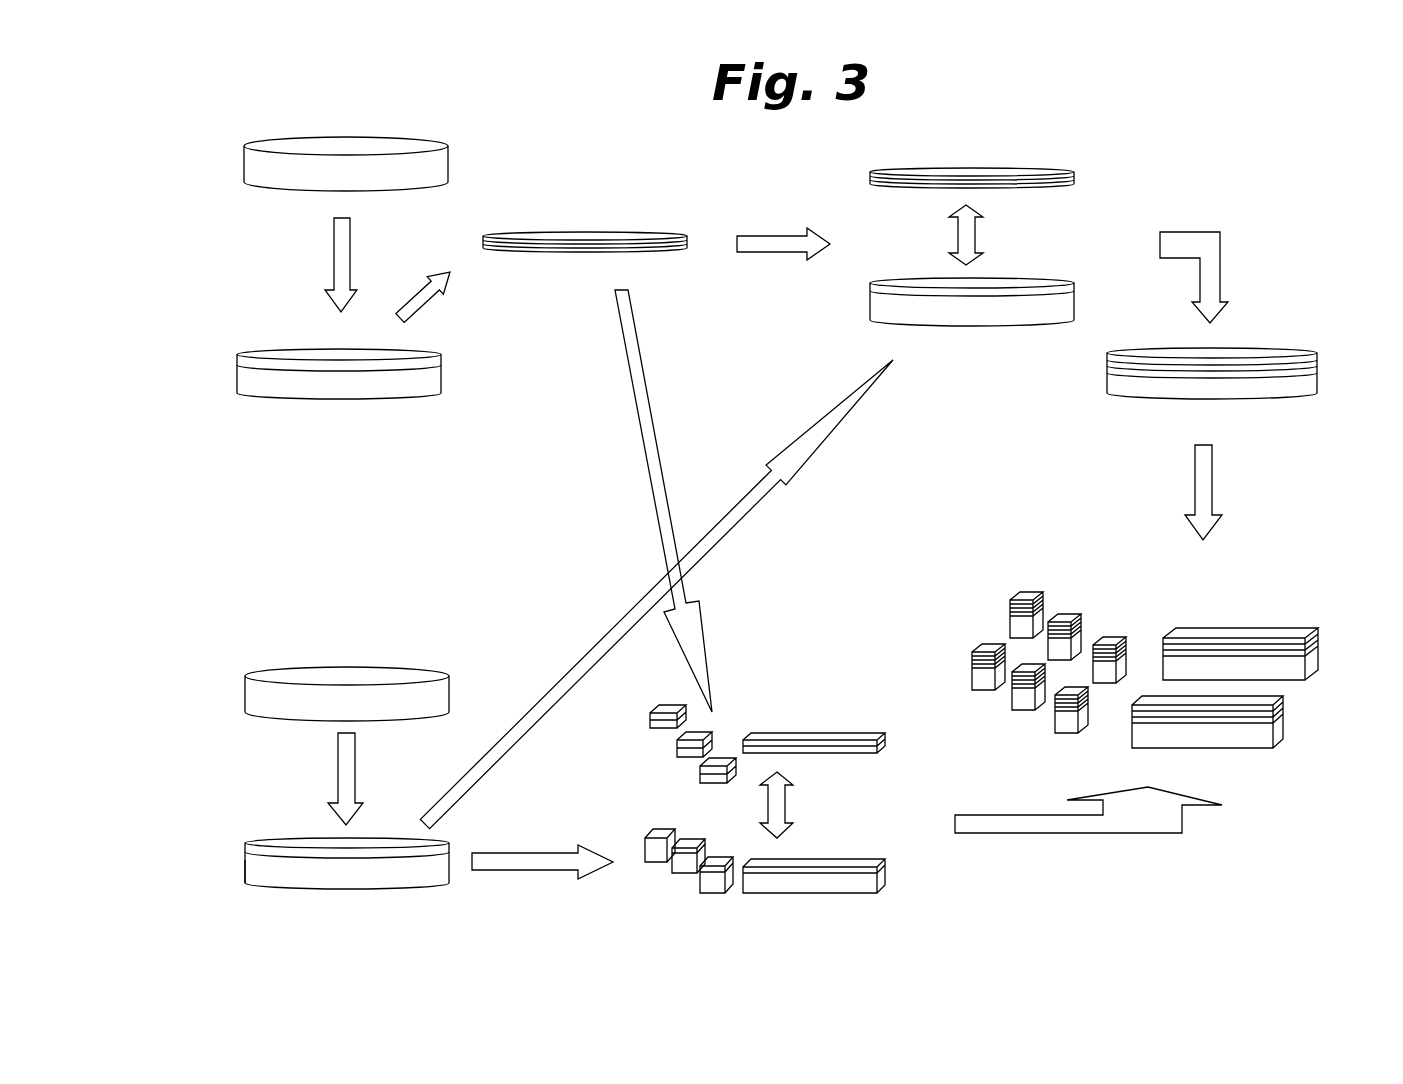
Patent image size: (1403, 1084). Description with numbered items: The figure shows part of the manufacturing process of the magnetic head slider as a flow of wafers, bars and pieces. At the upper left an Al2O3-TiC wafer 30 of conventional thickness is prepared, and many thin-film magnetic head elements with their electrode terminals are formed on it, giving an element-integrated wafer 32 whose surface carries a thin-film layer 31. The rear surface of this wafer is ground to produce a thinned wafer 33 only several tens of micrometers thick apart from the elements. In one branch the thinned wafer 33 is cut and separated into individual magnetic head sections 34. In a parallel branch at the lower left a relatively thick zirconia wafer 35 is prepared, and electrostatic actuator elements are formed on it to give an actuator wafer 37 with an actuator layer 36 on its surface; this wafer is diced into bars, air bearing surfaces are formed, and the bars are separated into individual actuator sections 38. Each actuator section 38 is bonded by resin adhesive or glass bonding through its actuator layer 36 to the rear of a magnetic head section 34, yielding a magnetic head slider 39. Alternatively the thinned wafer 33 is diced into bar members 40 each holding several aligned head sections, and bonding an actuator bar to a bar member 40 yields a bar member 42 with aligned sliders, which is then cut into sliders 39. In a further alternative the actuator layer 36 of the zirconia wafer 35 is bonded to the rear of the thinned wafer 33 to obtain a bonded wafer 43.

The Al2O3-TiC wafer 30 is at (443, 167).
The thin-film layer 31 is at (438, 357).
The element-integrated wafer 32 is at (228, 364).
The thinned wafer 33 is at (650, 219).
The magnetic head section 34 is at (688, 775).
The zirconia wafer 35 is at (447, 697).
The actuator layer 36 is at (645, 838).
The actuator wafer 37 is at (1088, 292).
The actuator section 38 is at (697, 898).
The magnetic head slider 39 is at (1127, 630).
The bar member for magnetic head sections 40 is at (855, 720).
The bar member with magnetic head sliders 42 is at (1327, 664).
The bonded wafer 43 is at (1323, 377).